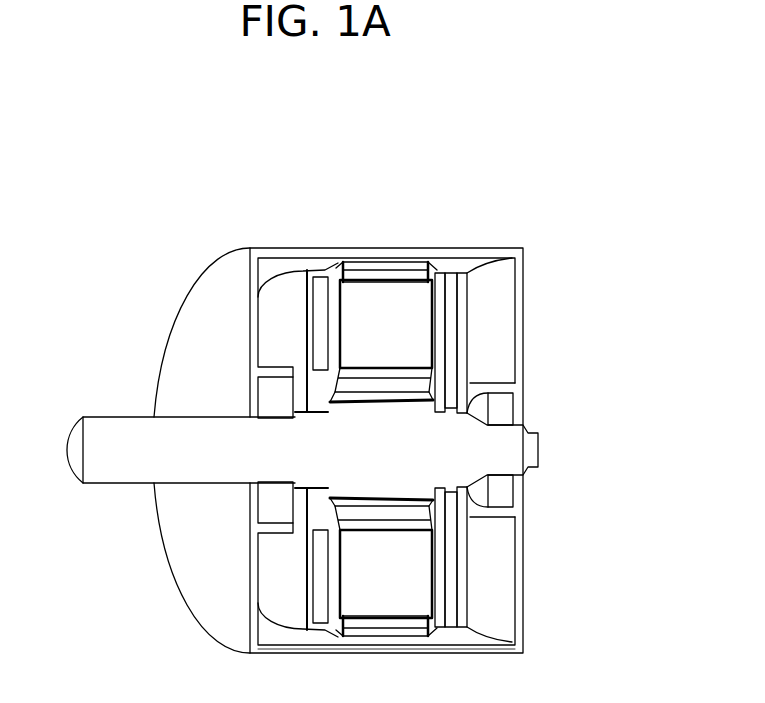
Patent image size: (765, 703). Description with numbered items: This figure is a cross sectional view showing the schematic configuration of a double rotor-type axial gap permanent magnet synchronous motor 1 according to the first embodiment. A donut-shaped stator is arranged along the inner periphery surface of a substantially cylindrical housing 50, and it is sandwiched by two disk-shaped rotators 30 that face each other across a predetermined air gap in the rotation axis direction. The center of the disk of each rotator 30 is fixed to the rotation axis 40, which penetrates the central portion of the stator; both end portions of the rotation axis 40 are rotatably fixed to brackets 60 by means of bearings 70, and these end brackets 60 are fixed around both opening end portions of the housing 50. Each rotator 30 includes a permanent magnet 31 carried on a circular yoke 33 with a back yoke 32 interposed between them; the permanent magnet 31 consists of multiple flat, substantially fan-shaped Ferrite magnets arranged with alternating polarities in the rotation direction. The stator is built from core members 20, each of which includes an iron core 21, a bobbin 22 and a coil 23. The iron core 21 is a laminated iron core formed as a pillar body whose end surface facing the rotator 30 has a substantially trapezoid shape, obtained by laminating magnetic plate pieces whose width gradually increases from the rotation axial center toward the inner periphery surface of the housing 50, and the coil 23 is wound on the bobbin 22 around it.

The motor 1 is at (163, 233).
The core member 20 is at (492, 189).
The iron core 21 is at (382, 292).
The bobbin 22 is at (428, 261).
The coil 23 is at (398, 270).
The rotator 30 is at (606, 288).
The permanent magnet 31 is at (443, 312).
The back yoke 32 is at (457, 348).
The circular yoke 33 is at (455, 390).
The rotation axis 40 is at (539, 436).
The housing 50 is at (483, 650).
The bracket 60 is at (192, 598).
The bearing 70 is at (273, 395).